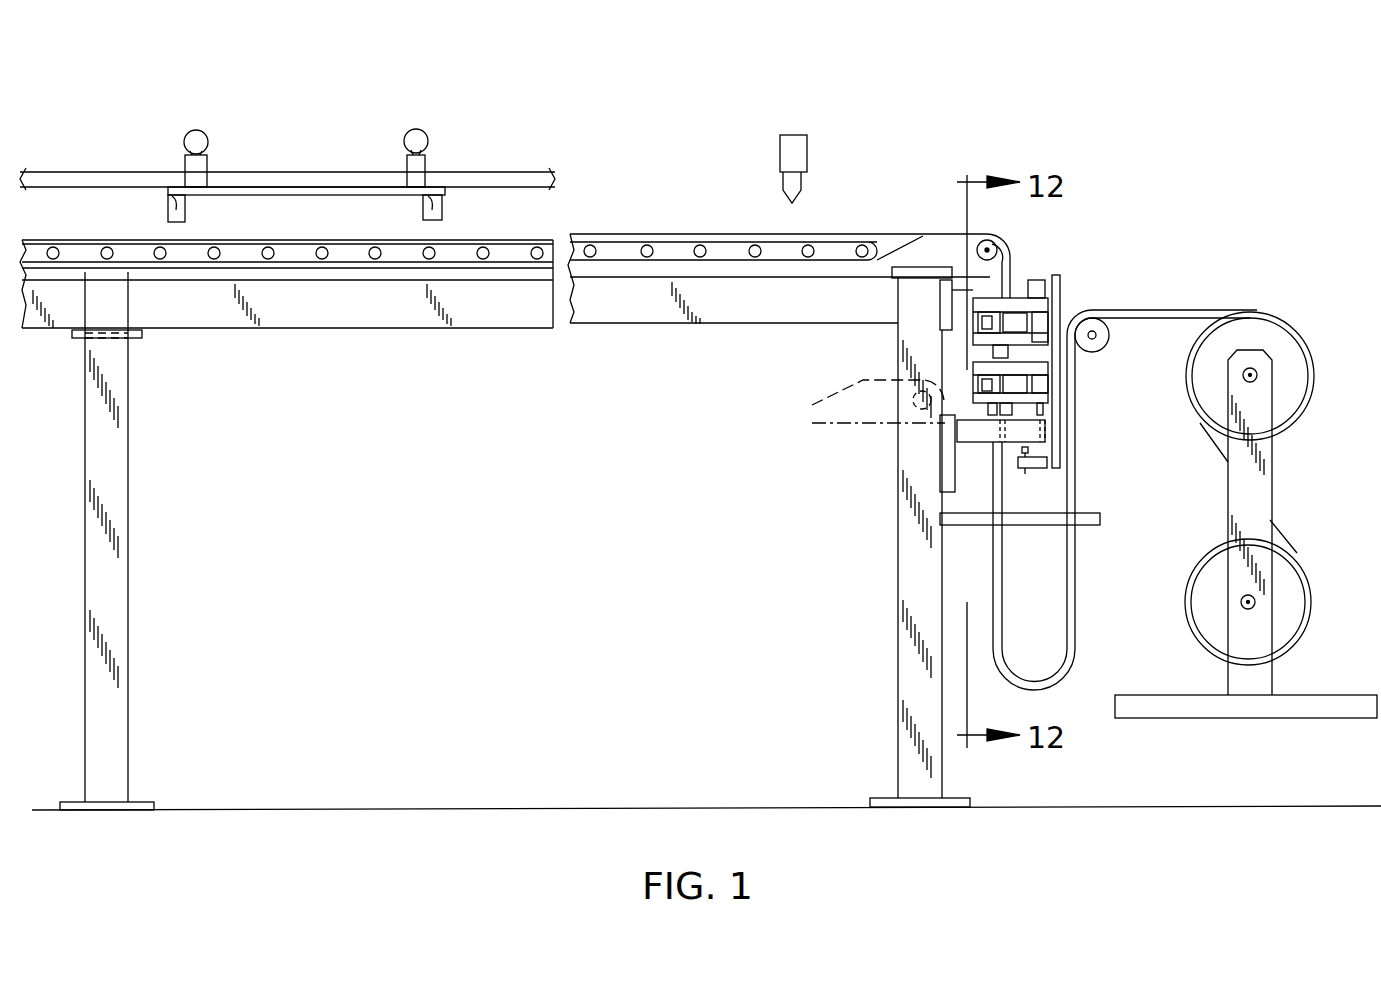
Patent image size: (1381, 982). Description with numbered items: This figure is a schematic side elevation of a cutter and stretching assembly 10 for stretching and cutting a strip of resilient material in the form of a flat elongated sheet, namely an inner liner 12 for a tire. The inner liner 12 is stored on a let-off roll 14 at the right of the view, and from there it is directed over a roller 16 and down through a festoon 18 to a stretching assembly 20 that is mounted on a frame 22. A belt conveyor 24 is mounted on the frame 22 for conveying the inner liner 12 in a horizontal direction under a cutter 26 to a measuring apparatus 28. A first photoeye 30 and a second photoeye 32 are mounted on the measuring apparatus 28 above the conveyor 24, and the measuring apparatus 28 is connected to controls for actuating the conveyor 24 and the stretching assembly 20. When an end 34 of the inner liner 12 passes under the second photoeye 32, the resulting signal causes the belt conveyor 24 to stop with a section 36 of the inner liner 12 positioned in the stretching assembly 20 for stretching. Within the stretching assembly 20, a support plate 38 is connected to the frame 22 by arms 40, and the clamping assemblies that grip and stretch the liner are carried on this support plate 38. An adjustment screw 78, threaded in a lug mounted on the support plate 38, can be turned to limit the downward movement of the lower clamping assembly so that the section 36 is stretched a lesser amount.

The cutter and stretching assembly 10 is at (1030, 236).
The inner liner 12 is at (1170, 312).
The let-off roll 14 is at (1297, 358).
The roller 16 is at (1102, 348).
The festoon 18 is at (1078, 598).
The stretching assembly 20 is at (1066, 266).
The frame 22 is at (605, 310).
The belt conveyor 24 is at (670, 238).
The cutter 26 is at (789, 135).
The measuring apparatus 28 is at (305, 180).
The first photoeye 30 is at (170, 205).
The second photoeye 32 is at (445, 205).
The end of the inner liner 34 is at (420, 240).
The section of the inner liner 36 is at (980, 353).
The support plate 38 is at (1060, 430).
The arms 40 is at (943, 318).
The adjustment screw 78 is at (1025, 474).